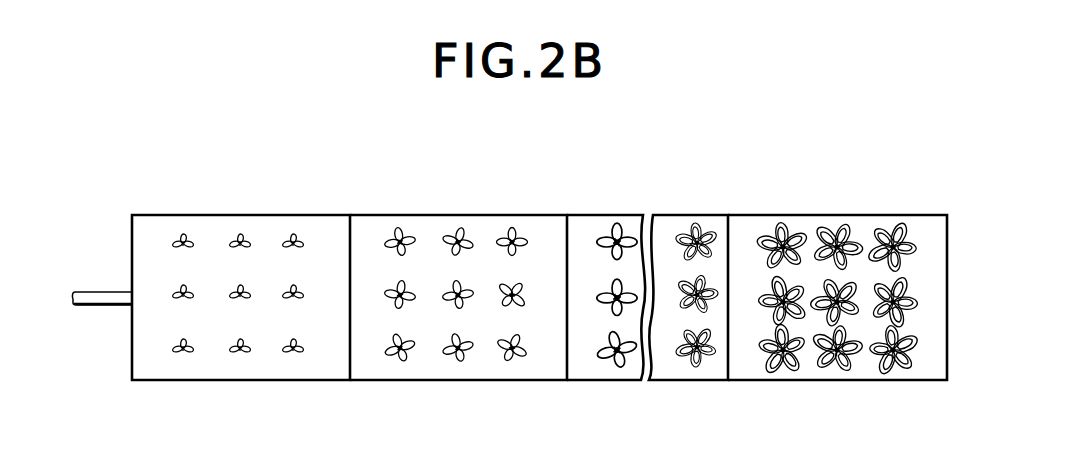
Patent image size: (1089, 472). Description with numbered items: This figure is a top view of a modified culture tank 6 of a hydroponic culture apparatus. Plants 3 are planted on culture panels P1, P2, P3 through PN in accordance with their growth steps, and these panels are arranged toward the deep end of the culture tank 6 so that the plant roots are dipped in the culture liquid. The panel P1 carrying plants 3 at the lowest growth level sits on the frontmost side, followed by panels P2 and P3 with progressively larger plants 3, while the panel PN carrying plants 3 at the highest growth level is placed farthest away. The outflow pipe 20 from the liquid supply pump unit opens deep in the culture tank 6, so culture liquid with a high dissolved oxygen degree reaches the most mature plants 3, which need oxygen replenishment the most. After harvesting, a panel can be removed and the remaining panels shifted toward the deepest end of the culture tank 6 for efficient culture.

The outflow pipe 20 is at (81, 290).
The plant 3 is at (298, 236).
The culture tank 6 is at (984, 205).
The culture panel P1 is at (214, 232).
The culture panel P2 is at (436, 232).
The culture panel P3 is at (603, 228).
The culture panel PN is at (826, 230).